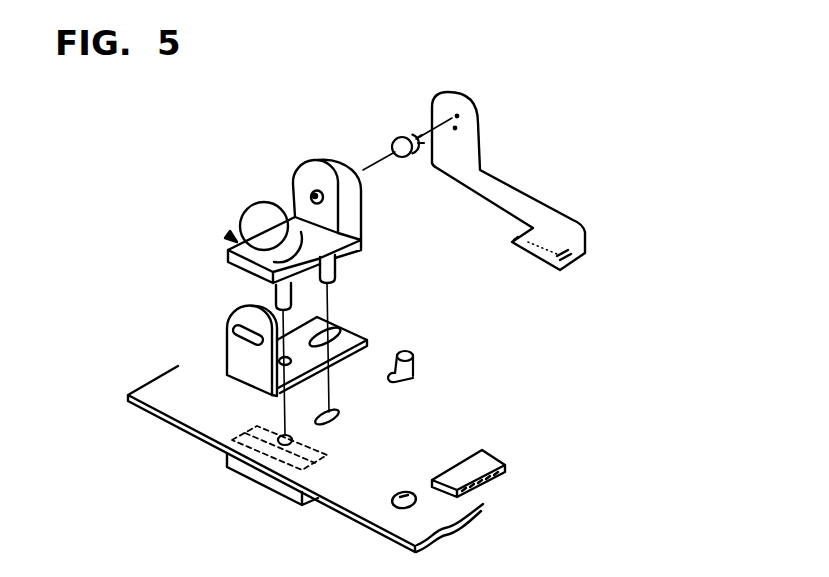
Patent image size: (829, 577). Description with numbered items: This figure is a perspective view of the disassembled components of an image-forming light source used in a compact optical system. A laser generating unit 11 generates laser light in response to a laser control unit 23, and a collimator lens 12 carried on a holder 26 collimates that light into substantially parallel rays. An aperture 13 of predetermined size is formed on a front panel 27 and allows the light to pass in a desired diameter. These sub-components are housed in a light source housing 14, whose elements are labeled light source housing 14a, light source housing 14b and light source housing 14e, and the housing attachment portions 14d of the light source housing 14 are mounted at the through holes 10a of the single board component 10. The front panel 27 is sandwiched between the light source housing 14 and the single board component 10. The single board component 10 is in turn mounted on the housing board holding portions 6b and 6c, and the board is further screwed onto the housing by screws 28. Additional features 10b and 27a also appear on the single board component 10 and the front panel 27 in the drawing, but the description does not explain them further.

The single board component 10 is at (180, 405).
The through holes 10a is at (340, 418).
The hole for pin 10b is at (415, 377).
The housing board holding portion 6b is at (415, 358).
The housing board holding portion 6c is at (277, 486).
The laser generating unit 11 is at (397, 140).
The collimator lens 12 is at (256, 222).
The aperture 13 is at (228, 328).
The light source housing 14 is at (289, 200).
The light source housing 14a is at (305, 222).
The light source housing 14b is at (236, 278).
The housing attachment portions 14d is at (292, 292).
The light source housing 14e is at (313, 194).
The laser control unit 23 is at (535, 203).
The holder 26 is at (229, 235).
The front panel 27 is at (291, 387).
The holes in support bracket 27a is at (292, 357).
The screws 28 is at (394, 508).